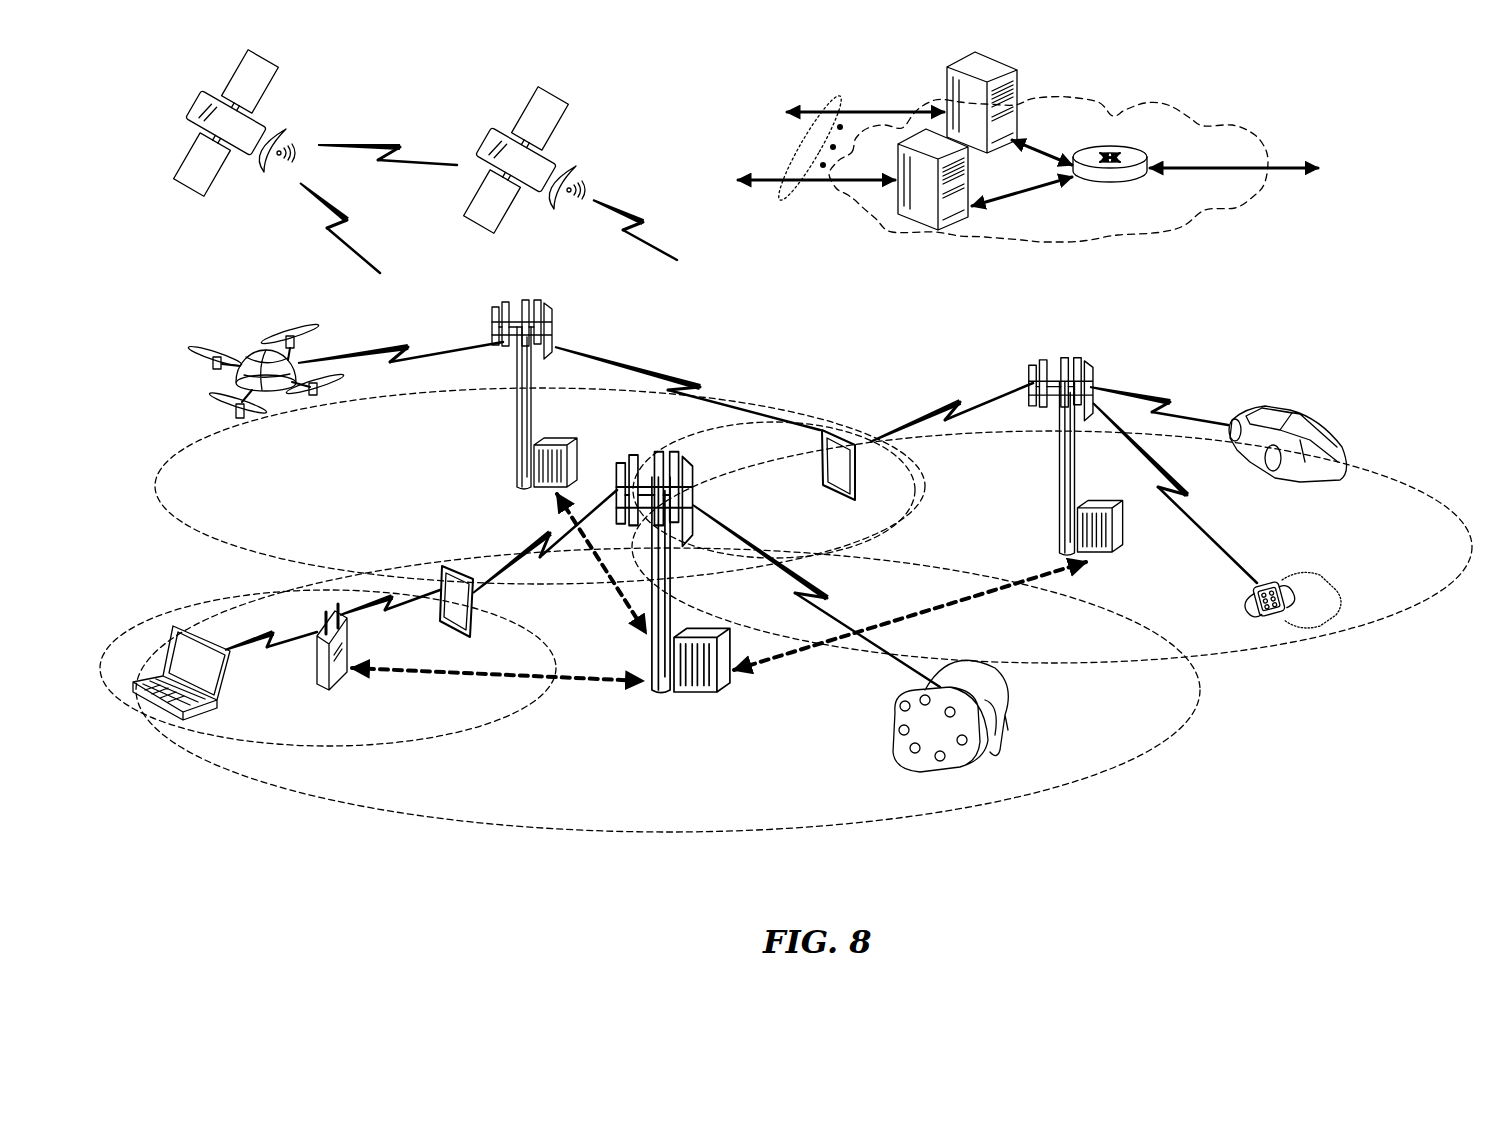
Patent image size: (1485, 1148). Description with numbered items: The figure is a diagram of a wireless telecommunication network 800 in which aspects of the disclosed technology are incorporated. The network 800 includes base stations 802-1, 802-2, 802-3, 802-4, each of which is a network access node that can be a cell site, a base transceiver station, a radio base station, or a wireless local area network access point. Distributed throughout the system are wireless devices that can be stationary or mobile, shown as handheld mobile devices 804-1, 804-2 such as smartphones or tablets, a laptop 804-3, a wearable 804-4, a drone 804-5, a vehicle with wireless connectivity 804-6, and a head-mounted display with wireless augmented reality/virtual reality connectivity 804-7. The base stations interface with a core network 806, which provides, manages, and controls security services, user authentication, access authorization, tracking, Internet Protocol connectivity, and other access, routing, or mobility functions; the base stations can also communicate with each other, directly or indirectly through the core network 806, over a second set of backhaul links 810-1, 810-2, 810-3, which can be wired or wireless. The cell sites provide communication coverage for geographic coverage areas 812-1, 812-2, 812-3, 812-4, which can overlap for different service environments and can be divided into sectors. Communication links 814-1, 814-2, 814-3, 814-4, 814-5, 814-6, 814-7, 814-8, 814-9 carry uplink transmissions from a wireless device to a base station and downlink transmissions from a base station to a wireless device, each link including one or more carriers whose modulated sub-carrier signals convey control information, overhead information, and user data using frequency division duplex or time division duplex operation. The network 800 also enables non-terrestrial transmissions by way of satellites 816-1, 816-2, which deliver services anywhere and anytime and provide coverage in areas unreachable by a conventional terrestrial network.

The wireless telecommunication network 800 is at (1364, 160).
The base station 802-1 is at (660, 692).
The base station 802-2 is at (517, 430).
The base station 802-3 is at (1060, 470).
The base station 802-4 is at (318, 665).
The handheld mobile device 804-1 is at (478, 612).
The handheld mobile device 804-2 is at (832, 462).
The laptop 804-3 is at (160, 722).
The wearable 804-4 is at (1272, 582).
The drone 804-5 is at (273, 397).
The vehicle with wireless connectivity 804-6 is at (1315, 420).
The head-mounted display 804-7 is at (1005, 707).
The core network 806 is at (1143, 243).
The backhaul link 810-1 is at (396, 672).
The backhaul link 810-2 is at (975, 600).
The backhaul link 810-3 is at (620, 598).
The geographic coverage area 812-1 is at (562, 830).
The geographic coverage area 812-2 is at (458, 732).
The geographic coverage area 812-3 is at (215, 546).
The geographic coverage area 812-4 is at (1365, 462).
The communication link 814-1 is at (828, 596).
The communication link 814-2 is at (540, 550).
The communication link 814-3 is at (258, 656).
The communication link 814-4 is at (395, 612).
The communication link 814-5 is at (398, 350).
The communication link 814-6 is at (690, 386).
The communication link 814-7 is at (950, 410).
The communication link 814-8 is at (1185, 490).
The communication link 814-9 is at (1160, 395).
The satellite 816-1 is at (283, 130).
The satellite 816-2 is at (560, 178).